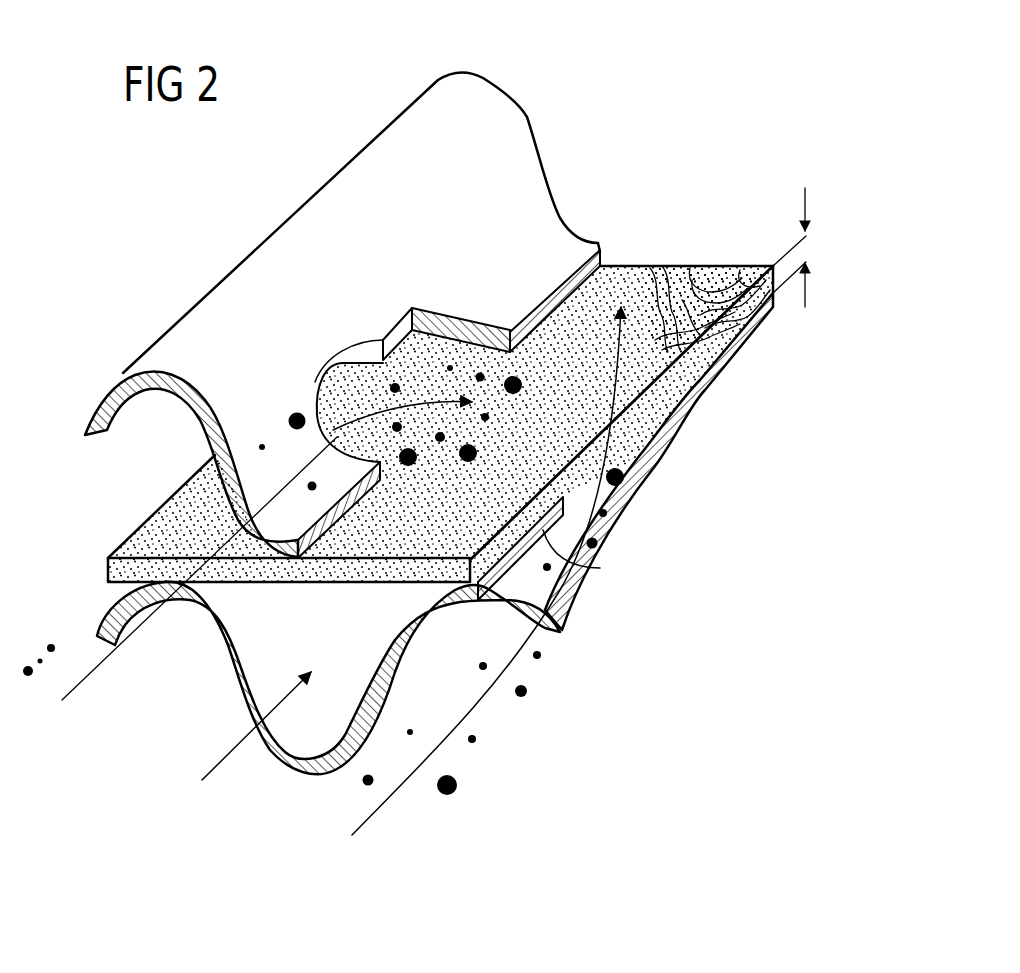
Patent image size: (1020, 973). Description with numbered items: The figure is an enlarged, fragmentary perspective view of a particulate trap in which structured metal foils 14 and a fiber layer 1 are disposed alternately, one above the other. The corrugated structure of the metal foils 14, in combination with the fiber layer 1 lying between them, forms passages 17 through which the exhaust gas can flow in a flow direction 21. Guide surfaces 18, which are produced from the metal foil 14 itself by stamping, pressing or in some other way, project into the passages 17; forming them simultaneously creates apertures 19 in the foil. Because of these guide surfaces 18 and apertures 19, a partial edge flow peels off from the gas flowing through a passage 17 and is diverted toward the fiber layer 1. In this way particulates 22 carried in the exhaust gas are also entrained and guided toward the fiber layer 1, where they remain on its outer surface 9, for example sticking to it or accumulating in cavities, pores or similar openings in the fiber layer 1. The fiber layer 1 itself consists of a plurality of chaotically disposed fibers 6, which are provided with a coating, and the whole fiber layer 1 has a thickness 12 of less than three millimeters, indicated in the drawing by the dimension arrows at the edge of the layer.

The fiber layer 1 is at (367, 390).
The fibers 6 is at (697, 265).
The outer surface 9 is at (180, 518).
The thickness 12 is at (802, 250).
The metal foils 14 is at (520, 137).
The passages 17 is at (278, 682).
The guide surfaces 18 is at (457, 326).
The apertures 19 is at (655, 402).
The flow direction 21 is at (473, 712).
The particulates 22 is at (627, 480).